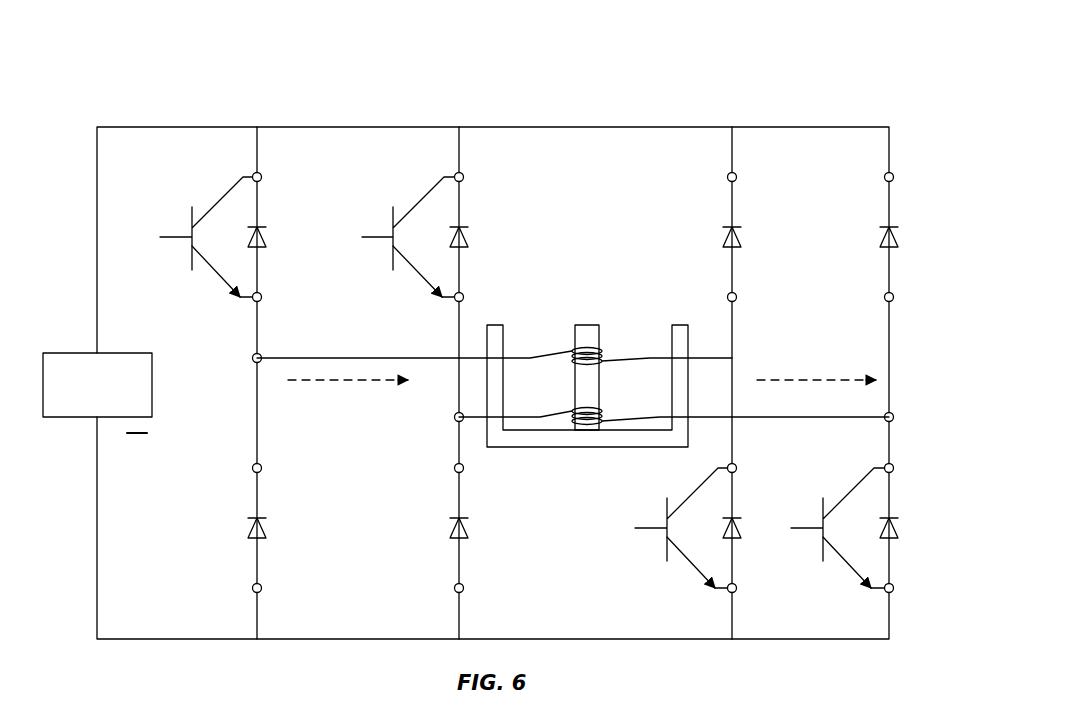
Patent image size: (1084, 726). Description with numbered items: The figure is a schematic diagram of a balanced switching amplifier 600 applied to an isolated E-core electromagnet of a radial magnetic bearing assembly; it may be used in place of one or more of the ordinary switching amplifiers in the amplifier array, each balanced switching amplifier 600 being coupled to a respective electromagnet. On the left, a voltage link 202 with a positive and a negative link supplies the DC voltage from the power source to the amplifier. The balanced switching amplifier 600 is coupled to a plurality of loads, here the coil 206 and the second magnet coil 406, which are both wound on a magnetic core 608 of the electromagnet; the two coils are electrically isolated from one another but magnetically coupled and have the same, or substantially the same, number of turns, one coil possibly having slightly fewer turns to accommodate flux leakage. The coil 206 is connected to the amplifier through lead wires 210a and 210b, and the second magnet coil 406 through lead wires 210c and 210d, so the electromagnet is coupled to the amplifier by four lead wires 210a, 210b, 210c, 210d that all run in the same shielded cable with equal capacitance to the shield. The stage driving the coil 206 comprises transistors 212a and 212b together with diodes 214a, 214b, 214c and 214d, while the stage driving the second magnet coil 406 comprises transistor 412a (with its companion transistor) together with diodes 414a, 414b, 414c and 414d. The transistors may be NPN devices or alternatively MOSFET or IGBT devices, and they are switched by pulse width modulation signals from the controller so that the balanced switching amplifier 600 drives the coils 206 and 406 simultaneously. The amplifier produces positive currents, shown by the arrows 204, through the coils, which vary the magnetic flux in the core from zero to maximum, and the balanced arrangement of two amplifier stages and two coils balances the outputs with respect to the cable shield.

The balanced switching amplifier 600 is at (868, 72).
The voltage link 202 is at (97, 378).
The arrow indicating positive current 204 is at (346, 384).
The coil 206 is at (573, 389).
The lead wire 210a is at (545, 356).
The lead wire 210b is at (643, 356).
The lead wire 210c is at (643, 414).
The lead wire 210d is at (548, 414).
The transistor 212a is at (180, 226).
The transistor 212b is at (655, 545).
The diode 214a is at (266, 240).
The diode 214b is at (742, 530).
The diode 214c is at (742, 240).
The diode 214d is at (267, 530).
The second magnet coil 406 is at (594, 436).
The transistor 412a is at (386, 226).
The diode 414a is at (468, 240).
The diode 414b is at (810, 545).
The diode 414c is at (900, 240).
The diode 414d is at (469, 530).
The magnetic core 608 is at (580, 449).